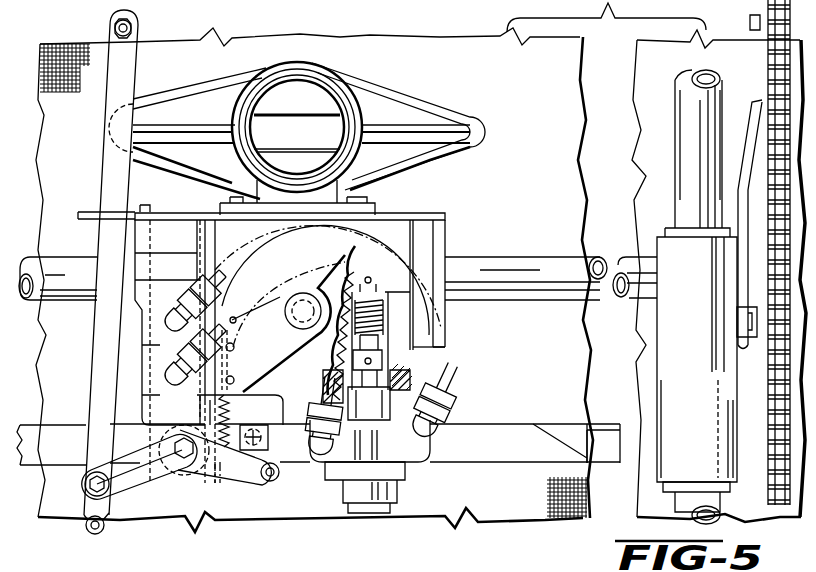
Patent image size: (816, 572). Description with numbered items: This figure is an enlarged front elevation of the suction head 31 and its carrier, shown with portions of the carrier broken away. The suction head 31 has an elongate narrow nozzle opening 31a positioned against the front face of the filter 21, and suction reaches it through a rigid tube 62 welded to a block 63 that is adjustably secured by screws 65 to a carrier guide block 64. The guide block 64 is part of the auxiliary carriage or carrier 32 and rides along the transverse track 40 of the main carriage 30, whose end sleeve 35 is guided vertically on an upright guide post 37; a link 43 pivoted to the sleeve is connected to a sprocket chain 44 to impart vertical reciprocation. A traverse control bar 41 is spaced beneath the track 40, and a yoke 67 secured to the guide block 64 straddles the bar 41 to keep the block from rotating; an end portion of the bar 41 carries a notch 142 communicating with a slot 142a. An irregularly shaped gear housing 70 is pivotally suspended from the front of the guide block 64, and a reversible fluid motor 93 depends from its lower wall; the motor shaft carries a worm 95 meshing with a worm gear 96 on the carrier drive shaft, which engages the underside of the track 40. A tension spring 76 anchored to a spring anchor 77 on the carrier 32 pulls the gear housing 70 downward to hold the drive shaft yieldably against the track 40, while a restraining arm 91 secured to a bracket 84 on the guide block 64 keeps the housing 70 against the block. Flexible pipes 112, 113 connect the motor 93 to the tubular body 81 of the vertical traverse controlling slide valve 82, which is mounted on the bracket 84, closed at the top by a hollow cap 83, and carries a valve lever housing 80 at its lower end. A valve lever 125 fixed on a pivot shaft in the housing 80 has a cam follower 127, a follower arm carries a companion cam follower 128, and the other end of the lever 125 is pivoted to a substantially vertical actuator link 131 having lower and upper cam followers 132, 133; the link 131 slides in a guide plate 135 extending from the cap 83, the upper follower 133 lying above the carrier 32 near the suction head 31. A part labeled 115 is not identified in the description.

The filter 21 is at (76, 356).
The main carriage 30 is at (474, 426).
The suction head 31 is at (430, 108).
The nozzle opening 31a is at (324, 120).
The auxiliary carriage or carrier 32 is at (455, 214).
The end guide block or sleeve 35 is at (702, 410).
The upright guide bar or post 37 is at (698, 76).
The transverse guide rod or track 40 is at (535, 257).
The traverse control bar 41 is at (512, 462).
The link 43 is at (746, 152).
The sprocket chain 44 is at (772, 421).
The rigid tube 62 is at (336, 94).
The block 63 is at (324, 175).
The carrier guide block 64 is at (424, 222).
The screws 65 is at (225, 198).
The yoke 67 is at (139, 484).
The gear housing 70 is at (440, 362).
The tension spring 76 is at (259, 422).
The spring anchor 77 is at (200, 496).
The valve lever housing 80 is at (316, 425).
The tubular body 81 is at (174, 310).
The traverse controlling slide valve 82 is at (148, 354).
The hollow cap 83 is at (186, 248).
The bracket 84 is at (214, 229).
The restraining arm 91 is at (300, 300).
The reversible fluid pressure motor 93 is at (398, 490).
The worm or screw 95 is at (382, 276).
The worm gear 96 is at (347, 252).
The inlet pipe 112 is at (203, 278).
The inlet pipe 113 is at (230, 360).
The cam plate 115 is at (294, 323).
The valve lever 125 is at (112, 528).
The cam follower 127 is at (270, 485).
The cam follower 128 is at (232, 480).
The actuator link 131 is at (108, 184).
The lower cam follower 132 is at (87, 533).
The upper cam follower 133 is at (116, 24).
The guide plate 135 is at (98, 219).
The notch 142 is at (570, 422).
The slot 142a is at (603, 465).